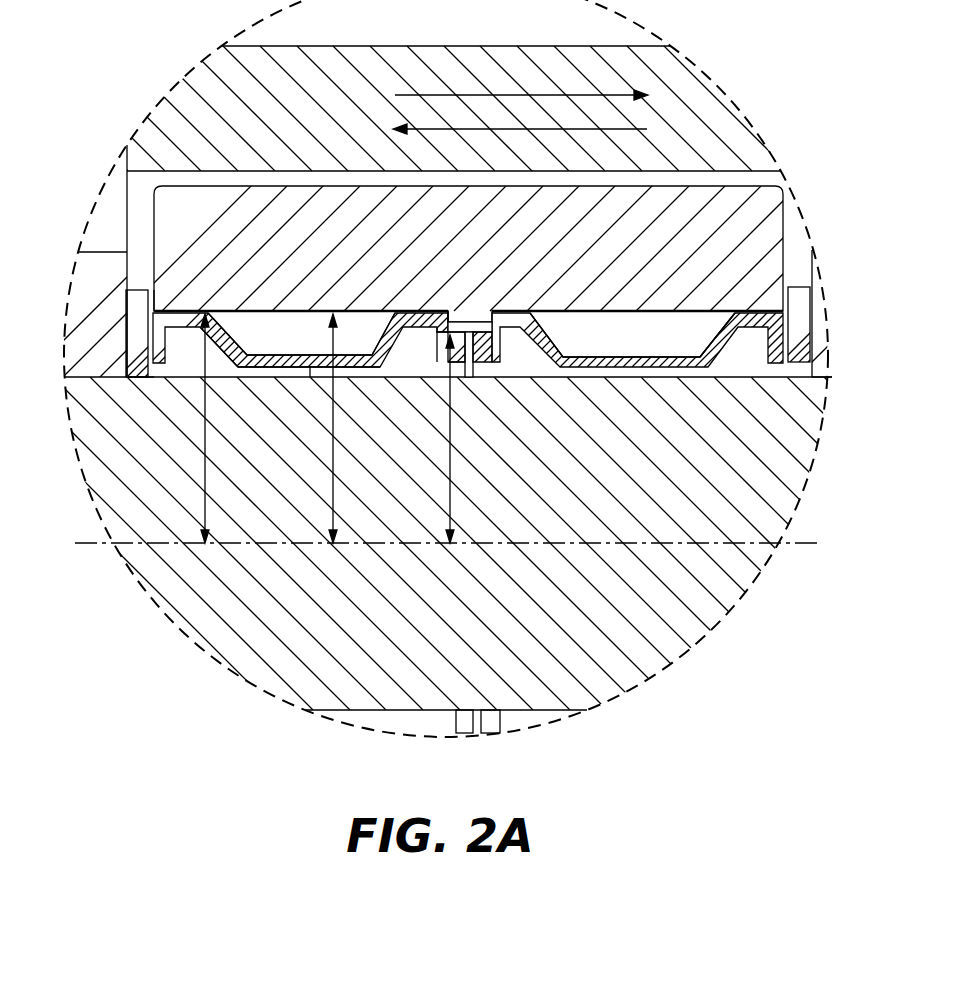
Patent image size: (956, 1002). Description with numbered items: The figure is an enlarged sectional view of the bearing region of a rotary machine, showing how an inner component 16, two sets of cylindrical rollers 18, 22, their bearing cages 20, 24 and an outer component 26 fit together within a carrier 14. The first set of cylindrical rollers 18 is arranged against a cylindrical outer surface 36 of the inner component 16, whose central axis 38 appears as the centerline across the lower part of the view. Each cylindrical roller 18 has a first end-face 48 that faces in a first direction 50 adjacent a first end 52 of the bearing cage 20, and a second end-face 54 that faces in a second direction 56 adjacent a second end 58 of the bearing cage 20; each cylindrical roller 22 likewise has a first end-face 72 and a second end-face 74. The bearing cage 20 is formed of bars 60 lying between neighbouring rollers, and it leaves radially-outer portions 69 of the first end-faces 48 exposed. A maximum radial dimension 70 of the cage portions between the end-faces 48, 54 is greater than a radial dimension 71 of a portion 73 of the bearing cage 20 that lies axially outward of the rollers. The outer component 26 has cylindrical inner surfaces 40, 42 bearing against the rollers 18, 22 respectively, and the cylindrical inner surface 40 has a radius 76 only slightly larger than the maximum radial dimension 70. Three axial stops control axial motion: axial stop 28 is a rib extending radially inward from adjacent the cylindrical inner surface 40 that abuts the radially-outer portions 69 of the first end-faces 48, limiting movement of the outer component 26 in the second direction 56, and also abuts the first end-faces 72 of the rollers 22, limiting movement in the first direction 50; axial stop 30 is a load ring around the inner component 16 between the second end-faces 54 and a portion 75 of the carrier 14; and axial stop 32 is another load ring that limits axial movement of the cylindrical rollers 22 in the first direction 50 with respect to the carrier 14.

The carrier 14 is at (75, 345).
The inner component 16 is at (502, 636).
The first set of cylindrical rollers 18 is at (265, 330).
The first bearing cage 20 is at (180, 315).
The second set of cylindrical rollers 22 is at (688, 322).
The second bearing cage 24 is at (558, 320).
The outer component 26 is at (334, 226).
The axial stop 28 is at (490, 318).
The axial stop 30 is at (140, 378).
The axial stop 32 is at (820, 382).
The cylindrical outer surface 36 is at (310, 375).
The central axis 38 is at (423, 545).
The cylindrical inner surface 40 is at (312, 325).
The cylindrical inner surface 42 is at (648, 322).
The first end-face 48 is at (446, 362).
The first direction 50 is at (478, 92).
The first end 52 is at (458, 368).
The second end-face 54 is at (175, 352).
The second direction 56 is at (505, 130).
The second end 58 is at (160, 304).
The bar 60 is at (305, 368).
The radially-outer portion 69 is at (448, 322).
The maximum radial dimension 70 is at (215, 517).
The radial dimension 71 is at (452, 462).
The first end-face 72 is at (490, 340).
The portion 73 is at (452, 312).
The second end-face 74 is at (805, 292).
The portion 75 is at (108, 327).
The radius 76 is at (333, 498).